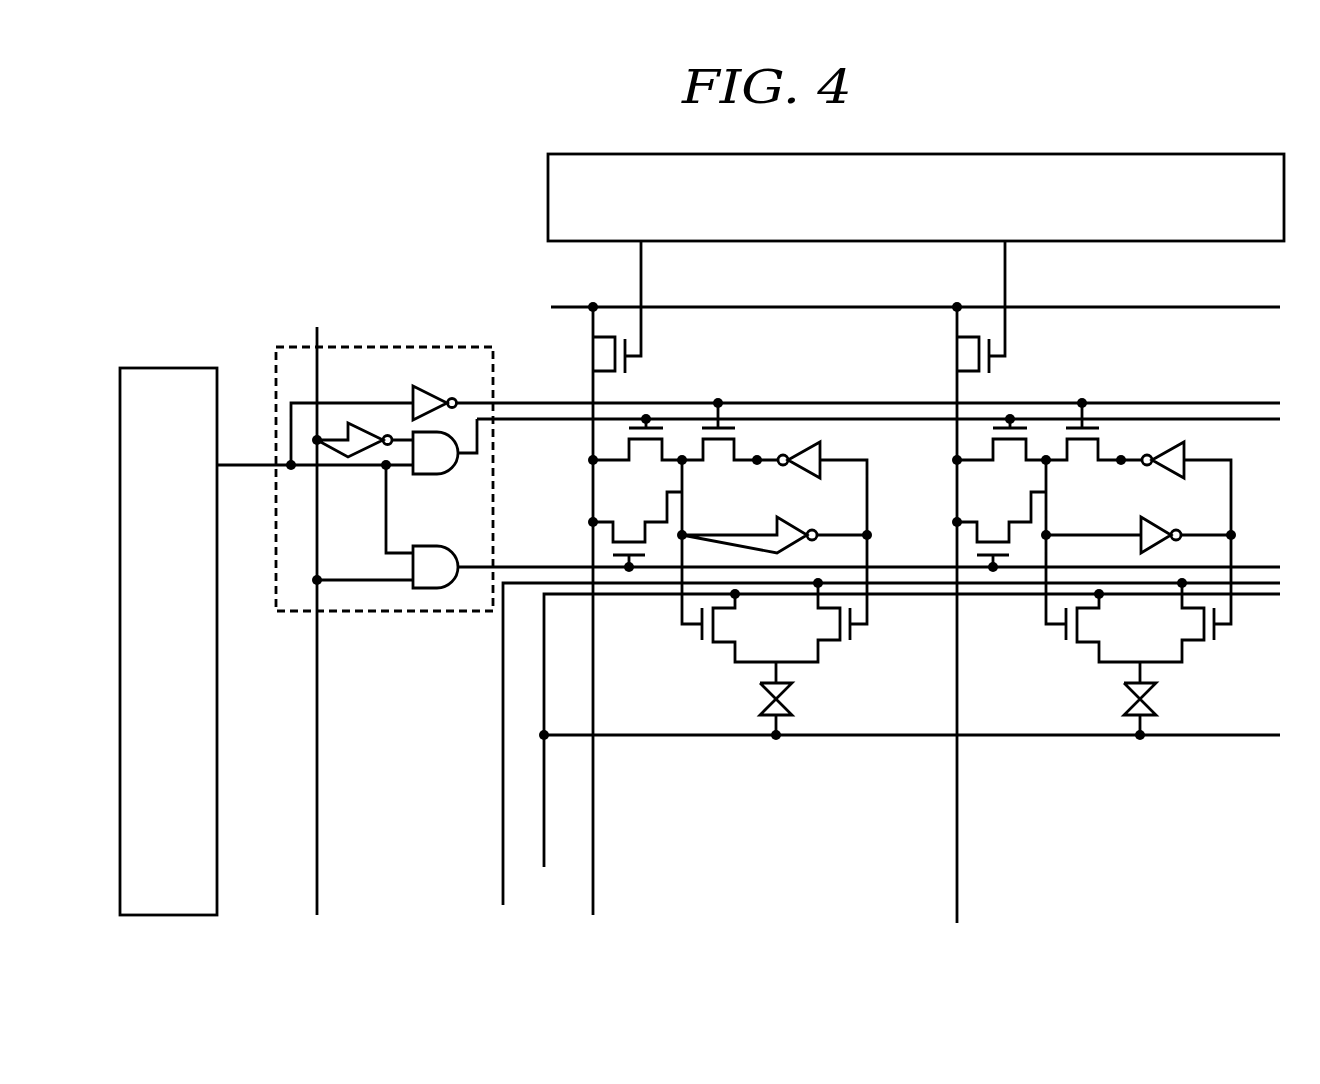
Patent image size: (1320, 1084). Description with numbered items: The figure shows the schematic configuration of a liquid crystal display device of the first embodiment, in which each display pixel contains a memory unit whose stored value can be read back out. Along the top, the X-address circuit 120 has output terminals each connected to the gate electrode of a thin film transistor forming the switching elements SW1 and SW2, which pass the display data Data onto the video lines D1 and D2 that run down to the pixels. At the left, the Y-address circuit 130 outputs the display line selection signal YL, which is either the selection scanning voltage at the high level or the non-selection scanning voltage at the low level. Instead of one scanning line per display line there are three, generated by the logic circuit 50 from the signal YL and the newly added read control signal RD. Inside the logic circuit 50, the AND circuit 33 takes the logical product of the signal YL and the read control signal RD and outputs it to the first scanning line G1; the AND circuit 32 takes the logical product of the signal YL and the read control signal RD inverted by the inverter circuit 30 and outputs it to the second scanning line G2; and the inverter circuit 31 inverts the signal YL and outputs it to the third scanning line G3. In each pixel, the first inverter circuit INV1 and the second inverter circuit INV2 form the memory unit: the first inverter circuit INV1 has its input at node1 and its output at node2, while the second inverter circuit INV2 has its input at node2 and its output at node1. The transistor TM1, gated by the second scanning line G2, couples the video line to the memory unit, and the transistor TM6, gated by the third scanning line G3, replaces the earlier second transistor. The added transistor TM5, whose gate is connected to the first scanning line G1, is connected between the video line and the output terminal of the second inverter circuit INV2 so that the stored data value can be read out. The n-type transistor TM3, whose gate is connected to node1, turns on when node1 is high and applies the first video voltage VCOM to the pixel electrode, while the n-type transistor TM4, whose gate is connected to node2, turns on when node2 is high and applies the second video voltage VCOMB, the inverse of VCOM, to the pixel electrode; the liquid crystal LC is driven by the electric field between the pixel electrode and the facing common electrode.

The X-address circuit 120 is at (1073, 150).
The Y-address circuit 130 is at (180, 368).
The logic circuit 50 is at (412, 347).
The inverter circuit 30 is at (367, 452).
The inverter circuit 31 is at (412, 388).
The AND circuit 32 is at (437, 477).
The AND circuit 33 is at (433, 590).
The read control signal RD is at (325, 604).
The display line selection signal YL is at (253, 470).
The display data Data is at (1128, 306).
The first scanning line G1 is at (480, 557).
The second scanning line G2 is at (542, 421).
The third scanning line G3 is at (517, 402).
The switching element SW1 is at (602, 356).
The switching element SW2 is at (977, 358).
The video line D1 is at (593, 832).
The video line D2 is at (957, 836).
The first video voltage VCOM is at (895, 745).
The second video voltage VCOMB is at (857, 758).
The transistor TM1 is at (1001, 461).
The n-type transistor TM3 is at (697, 630).
The n-type transistor TM4 is at (853, 632).
The transistor TM5 is at (635, 534).
The transistor TM6 is at (725, 442).
The first inverter circuit INV1 is at (792, 530).
The second inverter circuit INV2 is at (823, 442).
The liquid crystal LC is at (783, 692).
The node 1 node1 is at (1091, 519).
The node 2 node2 is at (1197, 514).